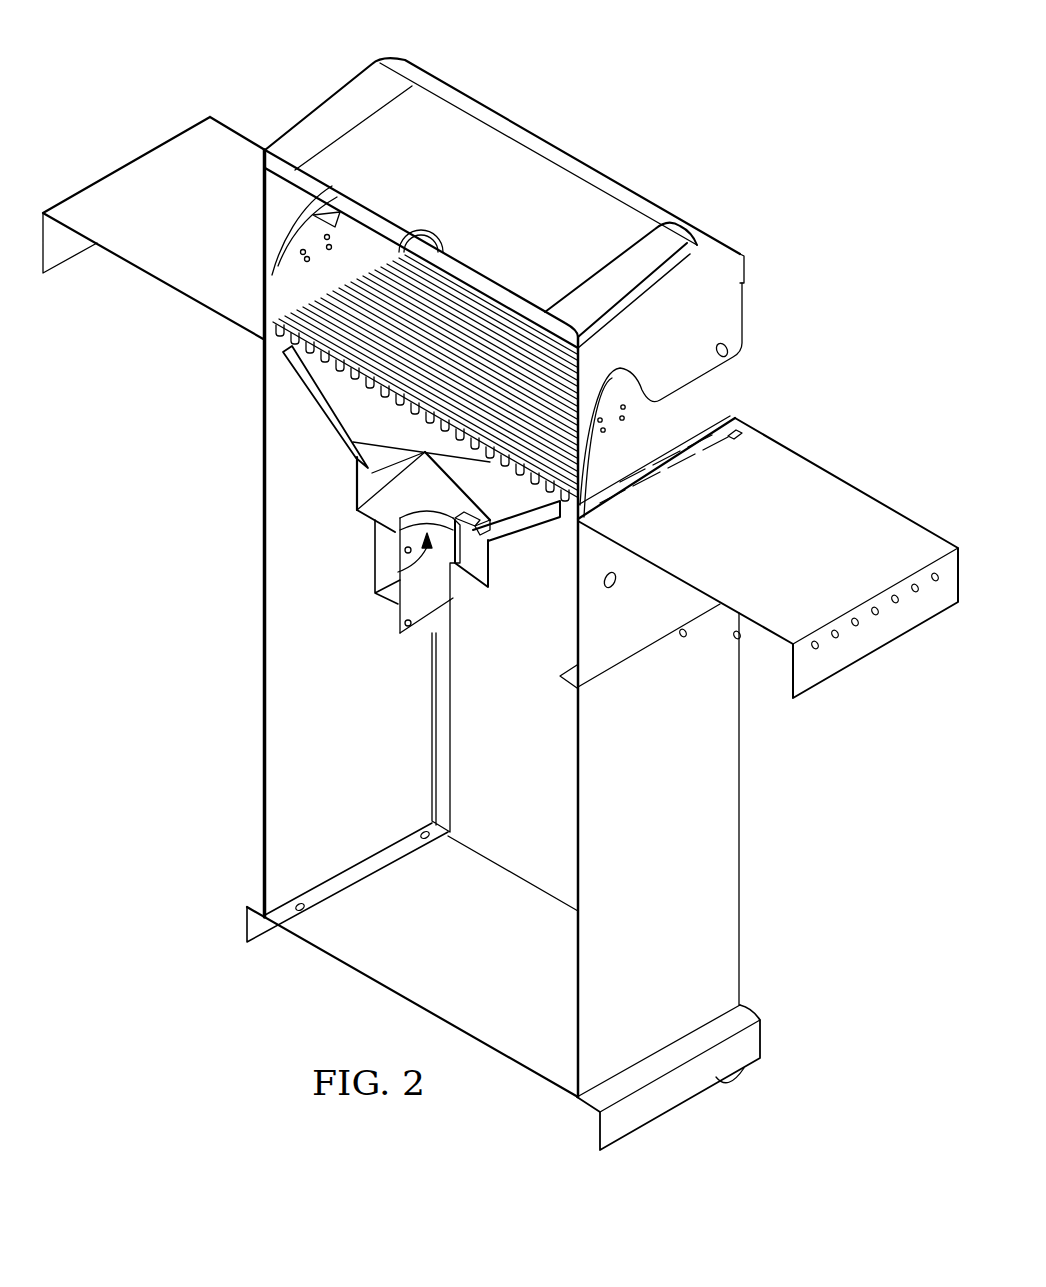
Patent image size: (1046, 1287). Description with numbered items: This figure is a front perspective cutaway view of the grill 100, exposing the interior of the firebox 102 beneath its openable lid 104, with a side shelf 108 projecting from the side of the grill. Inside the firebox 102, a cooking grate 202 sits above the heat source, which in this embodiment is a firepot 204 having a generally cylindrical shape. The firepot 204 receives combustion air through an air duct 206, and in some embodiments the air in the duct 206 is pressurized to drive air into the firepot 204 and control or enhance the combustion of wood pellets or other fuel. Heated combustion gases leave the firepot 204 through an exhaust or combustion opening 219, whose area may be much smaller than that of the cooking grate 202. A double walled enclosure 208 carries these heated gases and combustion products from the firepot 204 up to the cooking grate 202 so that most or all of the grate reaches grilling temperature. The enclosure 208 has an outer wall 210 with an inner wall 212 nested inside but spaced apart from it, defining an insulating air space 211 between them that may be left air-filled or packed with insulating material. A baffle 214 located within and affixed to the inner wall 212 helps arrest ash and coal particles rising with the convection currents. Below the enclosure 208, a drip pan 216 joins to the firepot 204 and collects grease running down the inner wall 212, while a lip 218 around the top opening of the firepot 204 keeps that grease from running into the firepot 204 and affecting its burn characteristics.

The grill 100 is at (691, 75).
The firebox 102 is at (728, 392).
The lid 104 is at (527, 168).
The side shelves 108 is at (890, 518).
The cooking grate 202 is at (292, 308).
The firepot 204 is at (403, 590).
The air duct 206 is at (493, 640).
The double walled enclosure 208 is at (322, 443).
The outer wall 210 is at (308, 420).
The insulating air space 211 is at (540, 530).
The inner wall 212 is at (287, 375).
The baffle 214 is at (513, 493).
The drip pan 216 is at (368, 512).
The lip 218 is at (424, 617).
The exhaust or combustion opening 219 is at (398, 577).